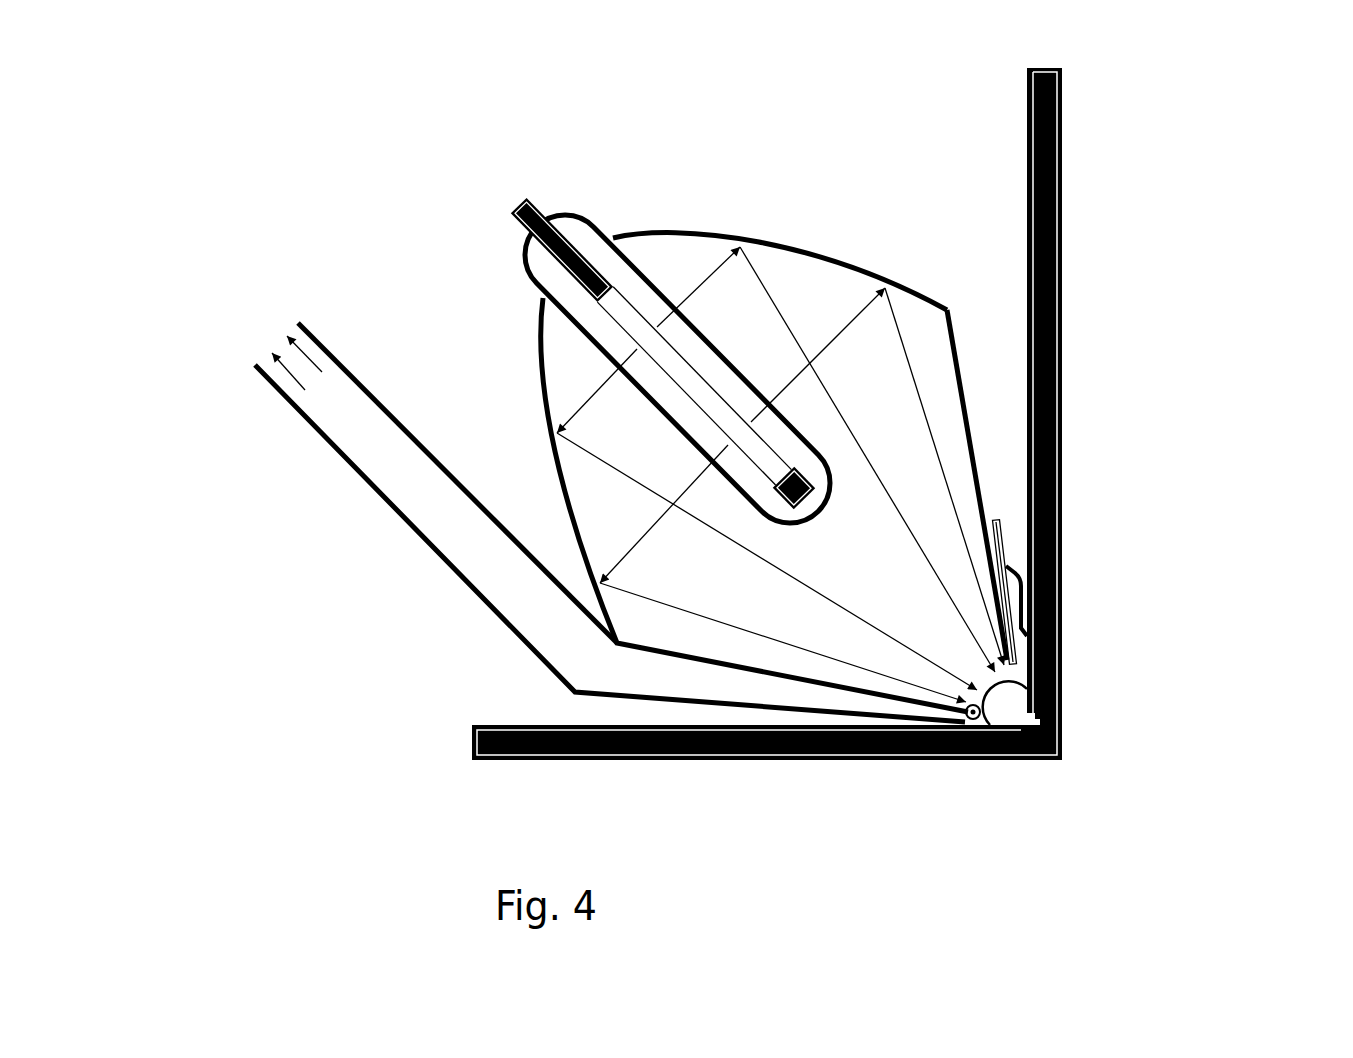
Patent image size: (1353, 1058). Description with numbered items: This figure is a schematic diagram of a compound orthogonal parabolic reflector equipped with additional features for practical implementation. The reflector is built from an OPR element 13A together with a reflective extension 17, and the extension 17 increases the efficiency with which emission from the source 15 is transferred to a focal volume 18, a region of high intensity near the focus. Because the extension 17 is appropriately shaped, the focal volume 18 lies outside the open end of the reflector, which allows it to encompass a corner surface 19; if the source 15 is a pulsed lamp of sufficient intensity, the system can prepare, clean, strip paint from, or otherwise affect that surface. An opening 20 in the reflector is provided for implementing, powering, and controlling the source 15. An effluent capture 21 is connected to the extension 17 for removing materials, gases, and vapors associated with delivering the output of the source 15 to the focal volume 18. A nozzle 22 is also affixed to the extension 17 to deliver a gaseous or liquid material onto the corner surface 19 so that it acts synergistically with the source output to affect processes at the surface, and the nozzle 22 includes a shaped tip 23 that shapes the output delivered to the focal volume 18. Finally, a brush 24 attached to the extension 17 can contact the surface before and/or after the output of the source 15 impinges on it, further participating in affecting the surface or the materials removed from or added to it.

The OPR element 13A is at (752, 190).
The source 15 is at (503, 228).
The extension 17 is at (982, 458).
The focal volume 18 is at (1012, 706).
The corner surface 19 is at (1037, 712).
The opening 20 is at (612, 232).
The effluent capture 21 is at (524, 476).
The nozzle 22 is at (1007, 542).
The shaped tip 23 is at (1035, 630).
The brush 24 is at (968, 727).